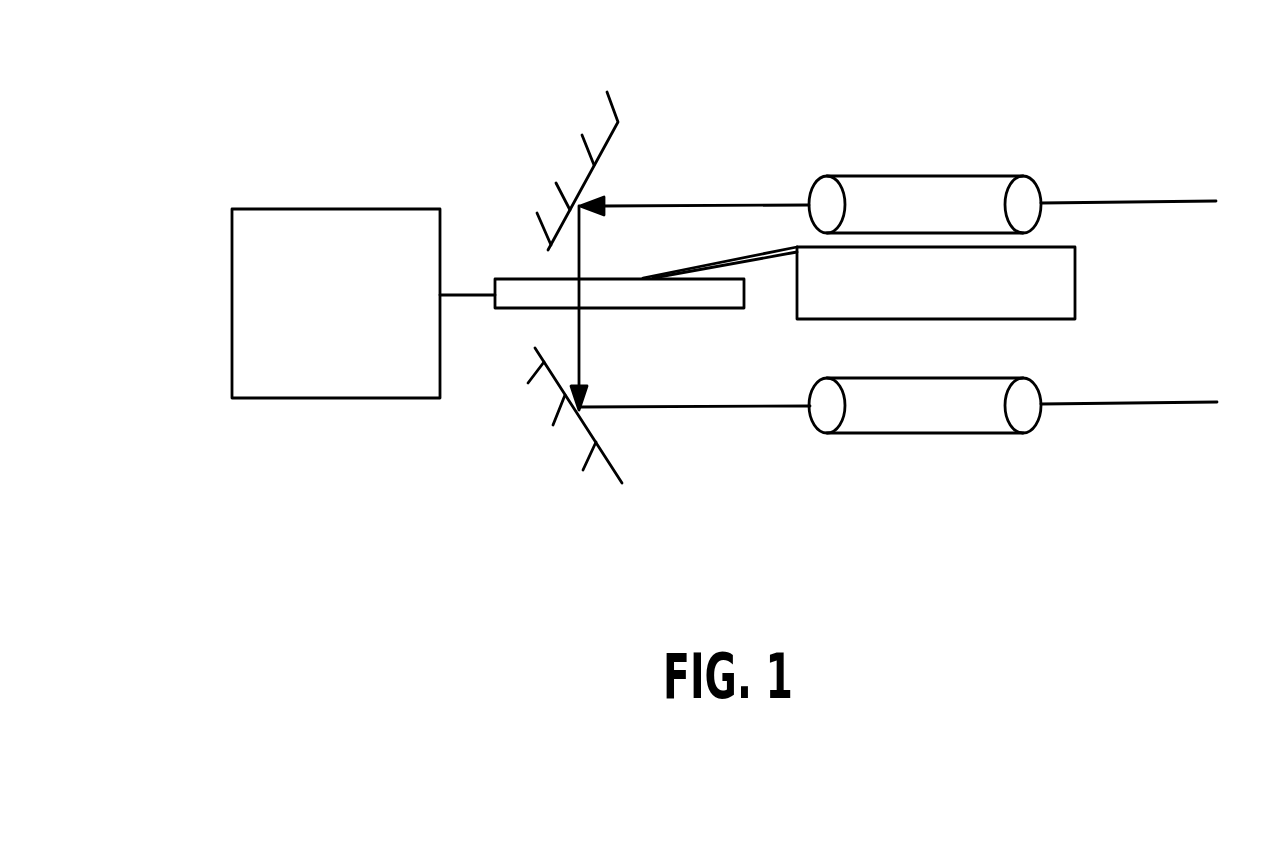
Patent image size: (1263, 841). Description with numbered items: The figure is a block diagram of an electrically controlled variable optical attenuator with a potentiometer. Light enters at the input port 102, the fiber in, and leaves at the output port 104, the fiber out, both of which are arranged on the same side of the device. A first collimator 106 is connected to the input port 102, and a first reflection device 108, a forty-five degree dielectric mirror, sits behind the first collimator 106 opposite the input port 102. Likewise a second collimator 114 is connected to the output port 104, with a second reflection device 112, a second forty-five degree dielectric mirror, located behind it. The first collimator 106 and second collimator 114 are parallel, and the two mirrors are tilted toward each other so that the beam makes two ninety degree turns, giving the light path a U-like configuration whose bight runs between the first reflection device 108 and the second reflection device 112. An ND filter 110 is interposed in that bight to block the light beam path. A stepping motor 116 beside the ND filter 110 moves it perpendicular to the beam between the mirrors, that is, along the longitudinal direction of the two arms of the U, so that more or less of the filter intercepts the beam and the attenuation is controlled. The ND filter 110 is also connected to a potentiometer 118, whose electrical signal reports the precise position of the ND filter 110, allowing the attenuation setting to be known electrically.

The input port 102 is at (1142, 202).
The output port 104 is at (1135, 403).
The first collimator 106 is at (938, 176).
The first reflection device 108 is at (586, 180).
The ND filter 110 is at (593, 280).
The second reflection device 112 is at (614, 478).
The second collimator 114 is at (918, 433).
The stepping motor 116 is at (360, 207).
The potentiometer 118 is at (1075, 282).